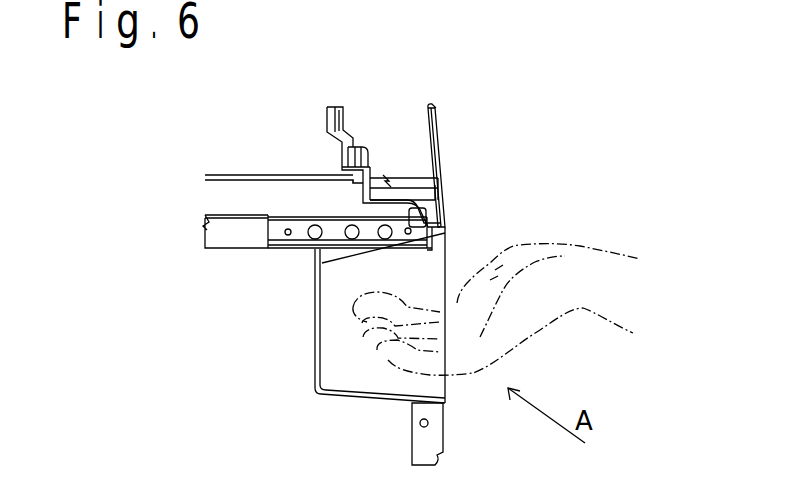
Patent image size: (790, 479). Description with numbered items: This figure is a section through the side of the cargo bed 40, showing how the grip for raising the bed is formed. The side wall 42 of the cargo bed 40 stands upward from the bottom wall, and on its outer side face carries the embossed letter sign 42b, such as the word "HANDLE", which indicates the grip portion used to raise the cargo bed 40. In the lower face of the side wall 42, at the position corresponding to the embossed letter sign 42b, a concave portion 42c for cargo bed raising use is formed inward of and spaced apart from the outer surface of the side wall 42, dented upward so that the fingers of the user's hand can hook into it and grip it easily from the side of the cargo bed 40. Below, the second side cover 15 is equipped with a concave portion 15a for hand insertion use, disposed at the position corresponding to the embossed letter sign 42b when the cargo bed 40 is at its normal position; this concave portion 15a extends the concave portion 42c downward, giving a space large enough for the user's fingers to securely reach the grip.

The cargo bed 40 is at (360, 92).
The side wall 42 is at (416, 134).
The embossed letter sign 42b is at (447, 197).
The concave portion for cargo bed raising use 42c is at (384, 221).
The second side cover 15 is at (312, 342).
The concave portion for hand insertion use 15a is at (315, 328).